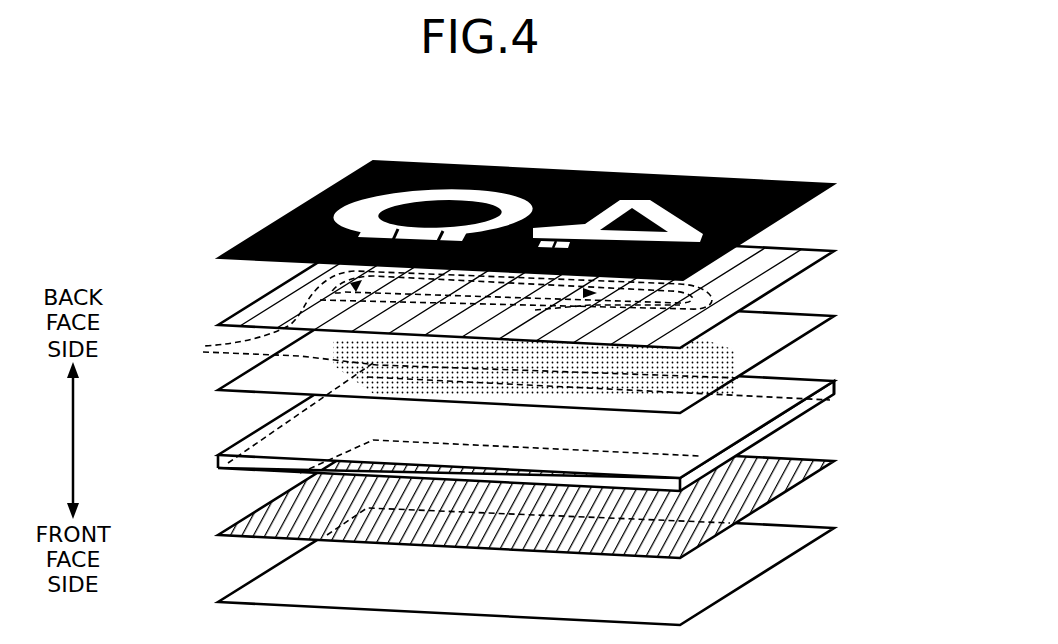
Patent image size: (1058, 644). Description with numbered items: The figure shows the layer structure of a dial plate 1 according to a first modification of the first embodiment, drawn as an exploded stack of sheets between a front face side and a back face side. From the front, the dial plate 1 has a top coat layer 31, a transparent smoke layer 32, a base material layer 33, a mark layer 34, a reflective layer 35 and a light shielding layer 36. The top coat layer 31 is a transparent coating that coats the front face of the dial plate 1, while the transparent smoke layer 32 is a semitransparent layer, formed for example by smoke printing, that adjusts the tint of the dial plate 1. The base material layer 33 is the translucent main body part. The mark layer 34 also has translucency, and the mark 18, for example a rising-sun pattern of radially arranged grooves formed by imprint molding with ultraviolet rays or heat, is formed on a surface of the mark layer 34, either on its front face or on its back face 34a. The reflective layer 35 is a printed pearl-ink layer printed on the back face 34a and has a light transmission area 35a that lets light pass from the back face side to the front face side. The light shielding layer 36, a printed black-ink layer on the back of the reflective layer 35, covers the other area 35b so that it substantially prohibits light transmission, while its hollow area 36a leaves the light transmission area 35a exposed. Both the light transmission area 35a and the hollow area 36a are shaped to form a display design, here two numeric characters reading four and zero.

The dial plate 1 is at (305, 117).
The mark 18 is at (721, 352).
The top coat layer 31 is at (766, 552).
The transparent smoke layer 32 is at (767, 480).
The base material layer 33 is at (766, 408).
The mark layer 34 is at (567, 350).
The back face of the mark layer 34a is at (785, 326).
The reflective layer 35 is at (534, 295).
The light transmission area 35a is at (432, 317).
The other area 35b is at (784, 262).
The light shielding layer 36 is at (567, 196).
The hollow area 36a is at (504, 204).